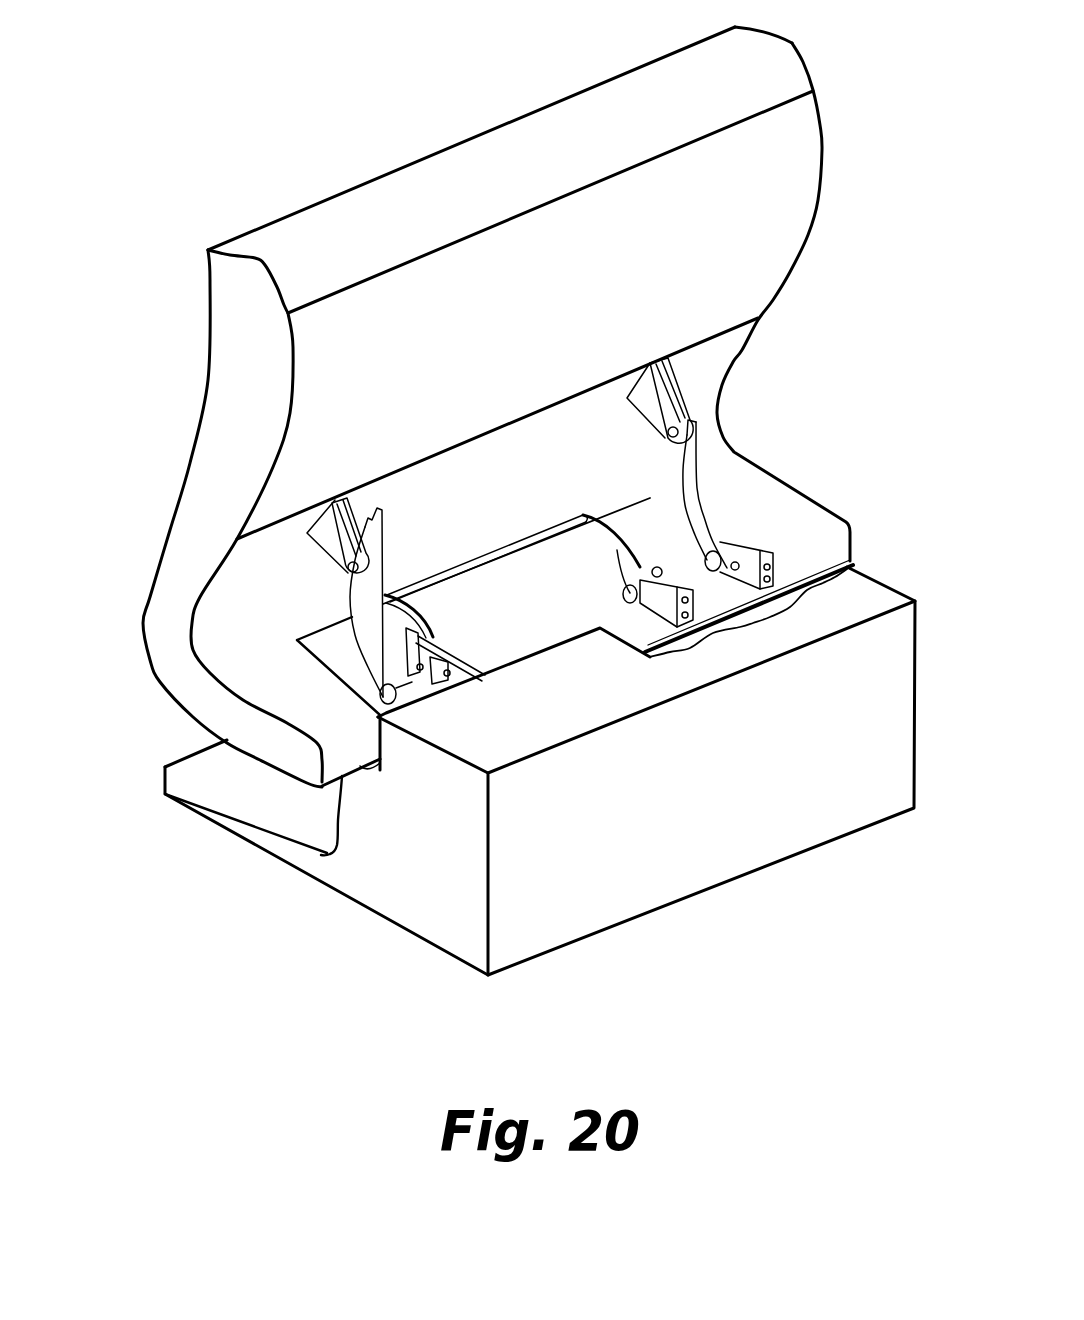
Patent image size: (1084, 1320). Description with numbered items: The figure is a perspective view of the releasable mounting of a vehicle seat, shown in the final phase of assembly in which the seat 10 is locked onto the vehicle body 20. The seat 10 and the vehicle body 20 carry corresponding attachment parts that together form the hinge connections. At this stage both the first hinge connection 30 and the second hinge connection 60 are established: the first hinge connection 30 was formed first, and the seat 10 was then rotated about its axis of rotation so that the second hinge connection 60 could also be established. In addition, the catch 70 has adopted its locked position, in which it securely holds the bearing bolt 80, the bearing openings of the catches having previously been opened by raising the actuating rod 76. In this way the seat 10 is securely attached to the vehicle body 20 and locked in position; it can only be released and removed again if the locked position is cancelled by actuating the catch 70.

The seat 10 is at (553, 172).
The vehicle body 20 is at (731, 799).
The first hinge connection 30 is at (340, 573).
The second hinge connection 60 is at (647, 609).
The catch 70 is at (618, 550).
The actuating rod 76 is at (493, 557).
The bearing bolt 80 is at (652, 595).